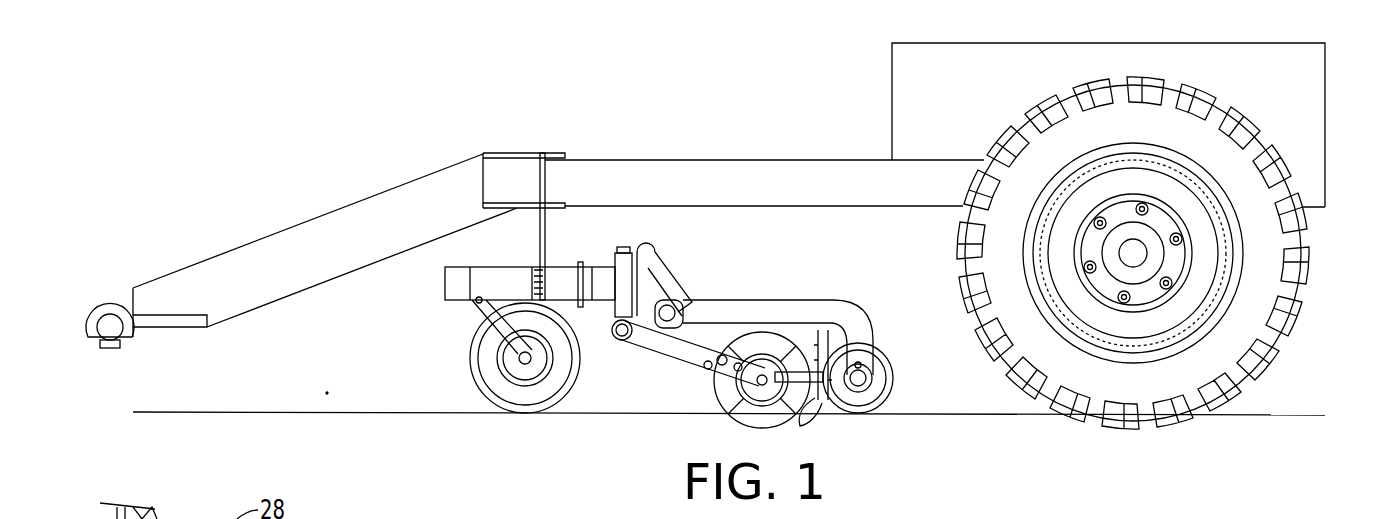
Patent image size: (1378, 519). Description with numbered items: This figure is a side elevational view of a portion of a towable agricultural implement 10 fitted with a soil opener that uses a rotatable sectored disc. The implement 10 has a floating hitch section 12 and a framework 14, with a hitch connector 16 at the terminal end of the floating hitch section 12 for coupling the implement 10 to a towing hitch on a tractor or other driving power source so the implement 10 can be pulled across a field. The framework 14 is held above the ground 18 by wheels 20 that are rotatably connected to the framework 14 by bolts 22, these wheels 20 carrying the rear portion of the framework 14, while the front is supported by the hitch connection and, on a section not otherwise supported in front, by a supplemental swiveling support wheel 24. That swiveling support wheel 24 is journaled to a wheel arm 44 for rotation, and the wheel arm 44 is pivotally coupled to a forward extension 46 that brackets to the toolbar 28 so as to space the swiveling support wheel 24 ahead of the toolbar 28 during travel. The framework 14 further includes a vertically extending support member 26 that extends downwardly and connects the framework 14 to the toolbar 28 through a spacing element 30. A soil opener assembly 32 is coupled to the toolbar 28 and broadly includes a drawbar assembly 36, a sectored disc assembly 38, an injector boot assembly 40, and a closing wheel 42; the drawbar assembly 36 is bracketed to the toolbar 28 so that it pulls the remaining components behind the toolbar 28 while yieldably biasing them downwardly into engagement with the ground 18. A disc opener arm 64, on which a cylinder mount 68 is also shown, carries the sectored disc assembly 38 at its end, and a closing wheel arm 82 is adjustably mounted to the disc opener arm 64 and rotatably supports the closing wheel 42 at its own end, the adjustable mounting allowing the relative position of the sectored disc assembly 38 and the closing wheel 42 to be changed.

The towable agricultural implement 10 is at (437, 62).
The floating hitch section 12 is at (303, 240).
The framework 14 is at (693, 178).
The hitch connector 16 is at (98, 312).
The ground 18 is at (322, 412).
The wheels 20 is at (1268, 318).
The bolts 22 is at (1168, 283).
The supplemental swiveling support wheel 24 is at (497, 387).
The vertically extending support member 26 is at (545, 233).
The toolbar 28 is at (597, 288).
The spacing element 30 is at (565, 275).
The soil opener assembly 32 is at (702, 283).
The drawbar assembly 36 is at (622, 362).
The sectored disc assembly 38 is at (712, 395).
The injector boot assembly 40 is at (820, 418).
The closing wheel 42 is at (890, 385).
The wheel arm 44 is at (500, 287).
The forward extension 46 is at (487, 318).
The disc opener arm 64 is at (678, 358).
The cylinder mount 68 is at (688, 268).
The closing wheel arm 82 is at (850, 320).